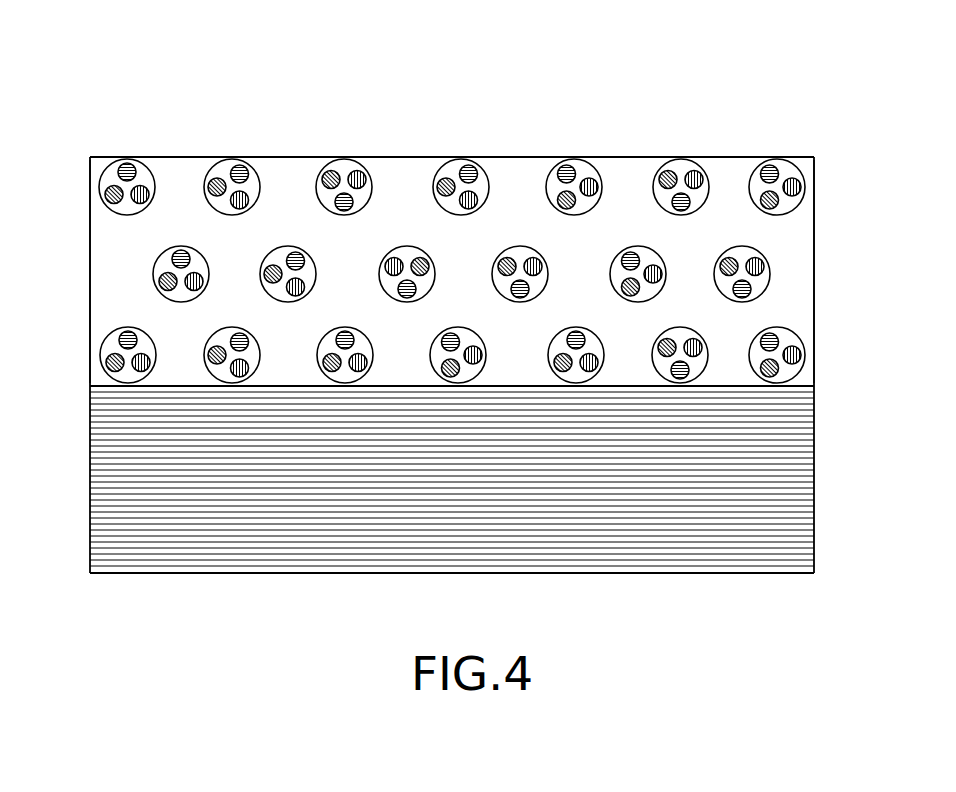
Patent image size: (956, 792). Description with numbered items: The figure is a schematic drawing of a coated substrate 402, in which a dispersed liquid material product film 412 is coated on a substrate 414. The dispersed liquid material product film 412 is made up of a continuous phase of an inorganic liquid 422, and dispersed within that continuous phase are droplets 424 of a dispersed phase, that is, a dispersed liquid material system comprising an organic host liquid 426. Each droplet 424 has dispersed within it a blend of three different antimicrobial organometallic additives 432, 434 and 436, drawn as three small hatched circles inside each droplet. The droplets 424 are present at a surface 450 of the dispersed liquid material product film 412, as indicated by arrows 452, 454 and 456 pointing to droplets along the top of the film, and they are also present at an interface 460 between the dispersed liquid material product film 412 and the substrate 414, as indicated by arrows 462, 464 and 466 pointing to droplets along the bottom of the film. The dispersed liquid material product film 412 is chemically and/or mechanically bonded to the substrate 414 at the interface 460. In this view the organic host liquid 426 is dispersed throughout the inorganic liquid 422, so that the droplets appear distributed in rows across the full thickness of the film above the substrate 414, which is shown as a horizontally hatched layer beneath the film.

The coated substrate 402 is at (479, 68).
The dispersed liquid material product film 412 is at (715, 158).
The substrate 414 is at (143, 553).
The inorganic liquid 422 is at (627, 178).
The droplets 424 is at (404, 246).
The organic host liquid 426 is at (388, 283).
The antimicrobial organometallic additive 432 is at (183, 262).
The antimicrobial organometallic additive 434 is at (163, 285).
The antimicrobial organometallic additive 436 is at (206, 285).
The surface 450 is at (287, 160).
The arrow 452 is at (108, 168).
The arrow 454 is at (553, 163).
The arrow 456 is at (785, 162).
The interface 460 is at (511, 387).
The arrow 462 is at (126, 374).
The arrow 464 is at (370, 346).
The arrow 466 is at (753, 350).